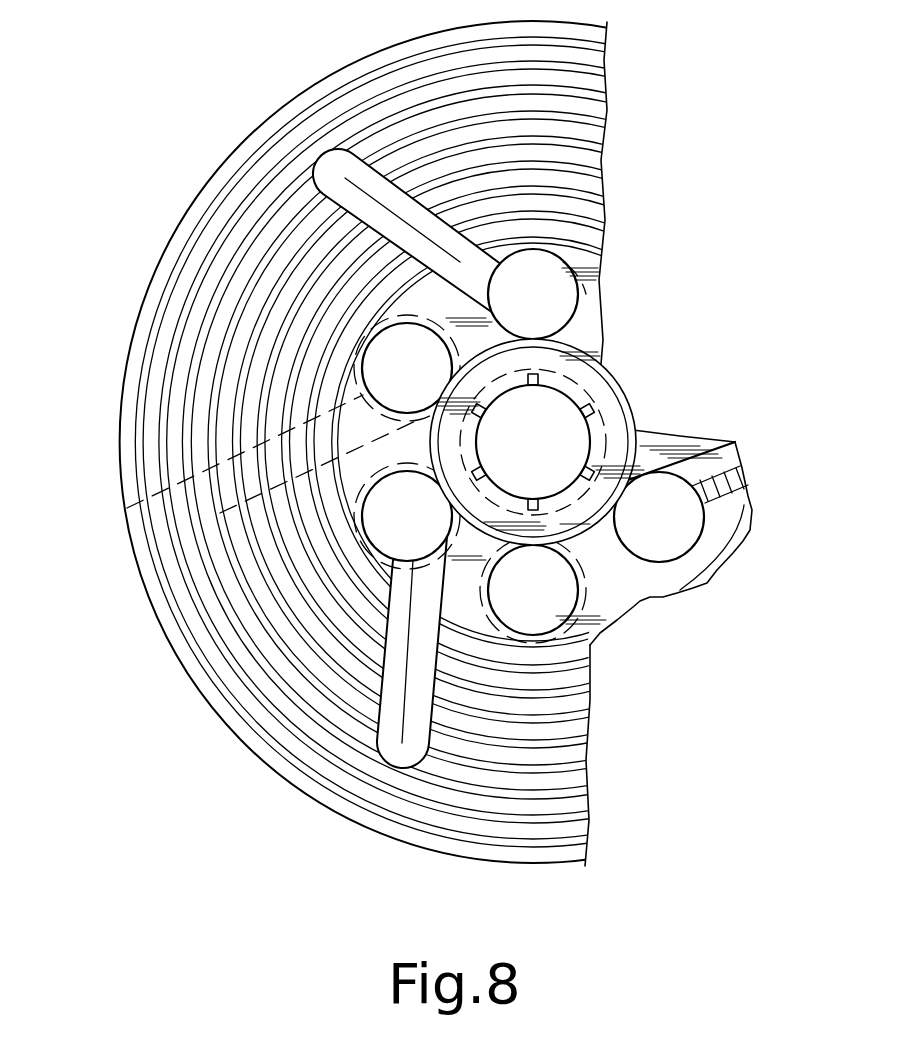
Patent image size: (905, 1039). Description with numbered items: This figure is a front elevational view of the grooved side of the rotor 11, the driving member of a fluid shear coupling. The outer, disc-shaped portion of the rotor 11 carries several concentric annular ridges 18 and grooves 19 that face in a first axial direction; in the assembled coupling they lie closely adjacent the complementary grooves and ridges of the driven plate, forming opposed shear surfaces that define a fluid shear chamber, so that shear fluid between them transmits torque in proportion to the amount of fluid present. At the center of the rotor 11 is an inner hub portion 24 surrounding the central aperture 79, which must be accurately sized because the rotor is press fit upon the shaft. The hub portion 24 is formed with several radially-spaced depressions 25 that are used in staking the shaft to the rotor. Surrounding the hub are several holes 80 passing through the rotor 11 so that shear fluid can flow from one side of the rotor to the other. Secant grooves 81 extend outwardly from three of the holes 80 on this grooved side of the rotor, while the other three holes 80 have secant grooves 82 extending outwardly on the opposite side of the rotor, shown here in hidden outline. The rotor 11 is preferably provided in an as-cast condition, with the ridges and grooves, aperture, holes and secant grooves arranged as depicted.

The rotor 11 is at (262, 174).
The annular ridges 18 is at (203, 230).
The annular grooves 19 is at (177, 300).
The hub portion 24 is at (584, 369).
The radially-spaced depressions 25 is at (575, 394).
The central aperture 79 is at (567, 445).
The holes 80 is at (588, 607).
The secant grooves 81 is at (380, 741).
The secant grooves 82 is at (165, 490).